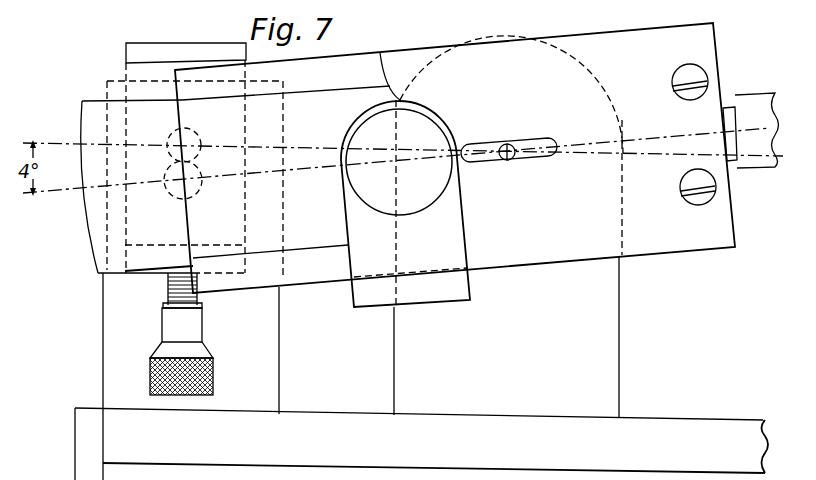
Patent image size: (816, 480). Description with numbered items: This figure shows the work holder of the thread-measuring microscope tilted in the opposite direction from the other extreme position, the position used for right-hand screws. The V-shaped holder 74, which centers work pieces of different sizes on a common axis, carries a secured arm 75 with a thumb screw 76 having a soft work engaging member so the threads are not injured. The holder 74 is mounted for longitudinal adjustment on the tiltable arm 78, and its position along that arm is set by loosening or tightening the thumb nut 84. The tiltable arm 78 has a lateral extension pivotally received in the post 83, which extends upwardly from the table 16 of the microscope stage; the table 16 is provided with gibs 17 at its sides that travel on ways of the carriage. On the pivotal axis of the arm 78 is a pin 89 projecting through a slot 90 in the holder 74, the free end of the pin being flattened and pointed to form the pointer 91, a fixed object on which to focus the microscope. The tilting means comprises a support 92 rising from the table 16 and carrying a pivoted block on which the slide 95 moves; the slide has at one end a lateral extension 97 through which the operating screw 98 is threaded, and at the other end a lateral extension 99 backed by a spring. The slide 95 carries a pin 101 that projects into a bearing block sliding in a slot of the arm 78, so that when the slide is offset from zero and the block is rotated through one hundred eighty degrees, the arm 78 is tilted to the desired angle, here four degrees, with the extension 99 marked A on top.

The table 16 is at (470, 446).
The gibs 17 is at (87, 433).
The V-shaped holder 74 is at (320, 273).
The arm 75 is at (457, 257).
The thumb screw 76 is at (437, 187).
The tiltable arm 78 is at (93, 227).
The post 83 is at (614, 326).
The thumb nut 84 is at (757, 97).
The pin 89 is at (502, 142).
The slot 90 is at (533, 140).
The pointer 91 is at (516, 158).
The support 92 is at (275, 362).
The slide 95 is at (135, 73).
The lateral extension 97 is at (153, 273).
The operating screw 98 is at (198, 335).
The lateral extension 99 is at (170, 47).
The pin 101 is at (181, 192).